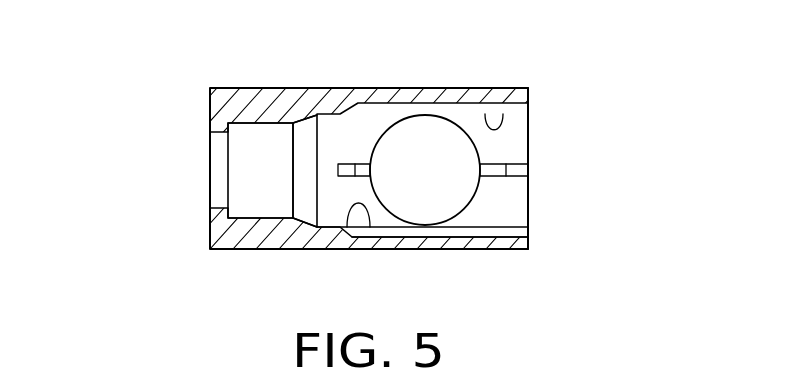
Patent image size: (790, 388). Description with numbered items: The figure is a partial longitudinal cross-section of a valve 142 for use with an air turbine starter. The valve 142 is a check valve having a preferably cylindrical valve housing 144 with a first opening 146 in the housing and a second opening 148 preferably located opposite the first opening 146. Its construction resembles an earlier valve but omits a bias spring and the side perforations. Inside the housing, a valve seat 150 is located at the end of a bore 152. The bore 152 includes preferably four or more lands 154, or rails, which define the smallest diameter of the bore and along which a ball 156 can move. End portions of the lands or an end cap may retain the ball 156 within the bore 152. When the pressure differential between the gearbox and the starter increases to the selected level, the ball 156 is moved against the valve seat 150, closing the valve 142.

The valve 142 is at (160, 77).
The valve housing 144 is at (252, 88).
The first opening 146 is at (200, 188).
The second opening 148 is at (583, 100).
The valve seat 150 is at (307, 220).
The bore 152 is at (490, 237).
The lands 154 is at (497, 115).
The ball 156 is at (448, 184).